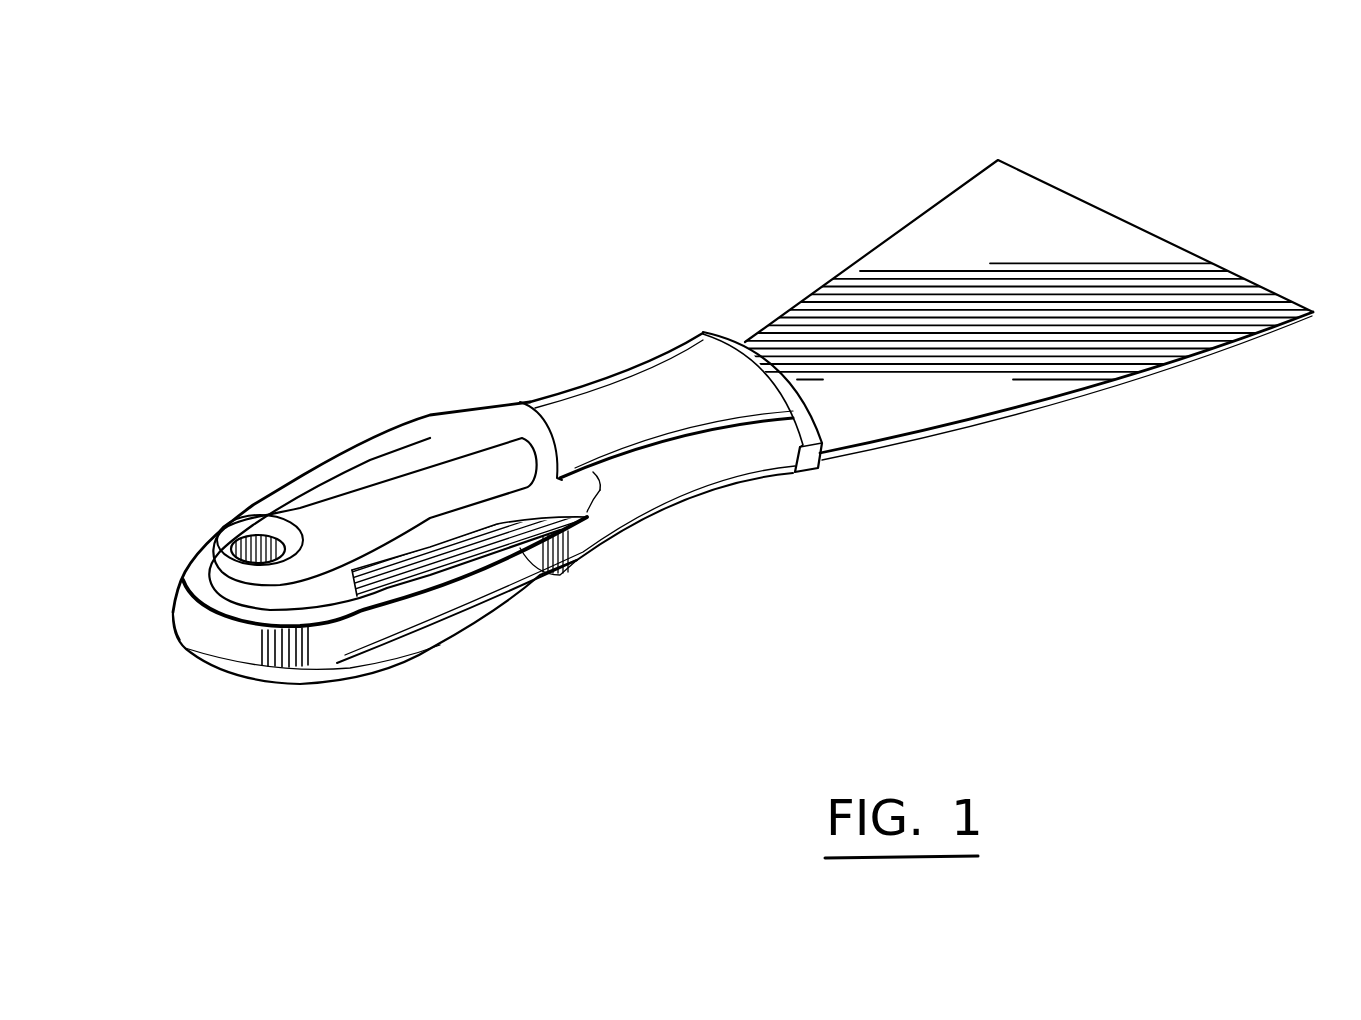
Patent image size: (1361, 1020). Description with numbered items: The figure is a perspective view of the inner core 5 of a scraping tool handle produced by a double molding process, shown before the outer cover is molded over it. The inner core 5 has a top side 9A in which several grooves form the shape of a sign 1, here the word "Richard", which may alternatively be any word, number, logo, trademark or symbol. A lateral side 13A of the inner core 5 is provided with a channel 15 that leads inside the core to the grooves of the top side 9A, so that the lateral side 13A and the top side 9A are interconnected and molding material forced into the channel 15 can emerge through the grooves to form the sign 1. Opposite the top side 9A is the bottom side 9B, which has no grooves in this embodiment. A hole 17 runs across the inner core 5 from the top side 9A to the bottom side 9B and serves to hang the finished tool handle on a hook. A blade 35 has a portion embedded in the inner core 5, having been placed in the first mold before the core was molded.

The sign 1 is at (367, 480).
The inner core 5 is at (209, 707).
The top side 9A is at (488, 445).
The bottom side 9B is at (390, 670).
The lateral side 13A is at (428, 611).
The channel 15 is at (492, 533).
The hole 17 is at (259, 540).
The blade 35 is at (942, 245).